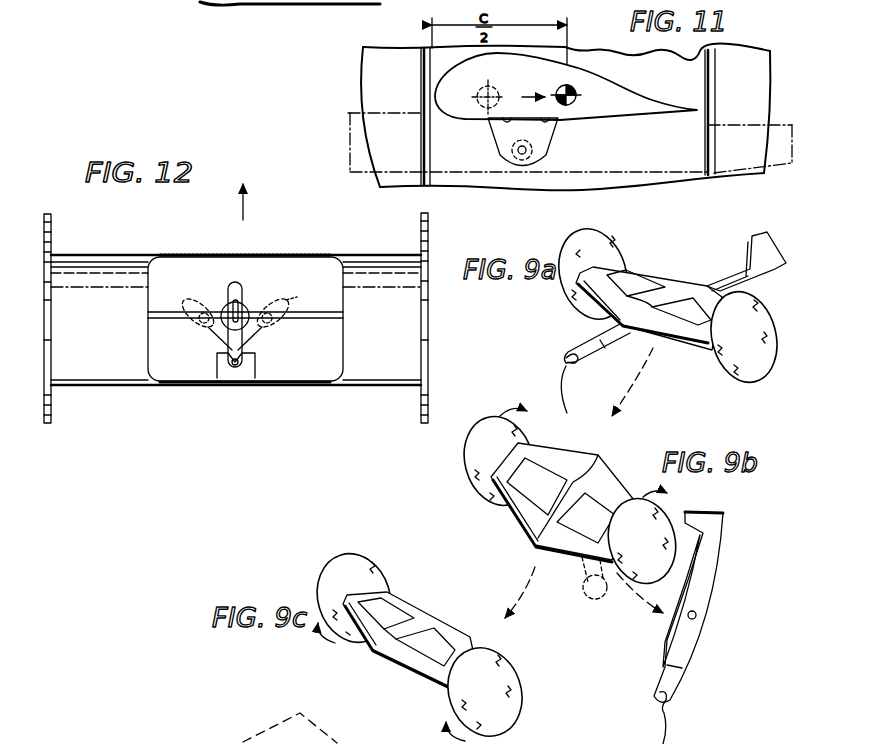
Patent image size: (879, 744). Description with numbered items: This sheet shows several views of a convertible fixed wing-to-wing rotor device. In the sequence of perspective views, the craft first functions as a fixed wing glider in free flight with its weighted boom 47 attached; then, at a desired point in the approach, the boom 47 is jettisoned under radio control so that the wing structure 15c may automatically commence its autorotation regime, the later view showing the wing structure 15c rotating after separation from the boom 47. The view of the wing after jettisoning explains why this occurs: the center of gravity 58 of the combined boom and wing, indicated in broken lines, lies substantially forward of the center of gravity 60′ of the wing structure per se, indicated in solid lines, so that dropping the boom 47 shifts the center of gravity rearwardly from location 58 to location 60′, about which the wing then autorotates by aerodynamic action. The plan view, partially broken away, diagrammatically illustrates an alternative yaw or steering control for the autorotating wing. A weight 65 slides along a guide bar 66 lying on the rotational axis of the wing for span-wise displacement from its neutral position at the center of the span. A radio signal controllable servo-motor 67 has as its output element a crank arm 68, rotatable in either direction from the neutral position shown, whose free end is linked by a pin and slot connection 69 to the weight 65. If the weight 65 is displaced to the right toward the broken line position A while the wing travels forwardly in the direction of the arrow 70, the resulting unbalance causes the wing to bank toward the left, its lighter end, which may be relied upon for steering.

In FIG. 11, the center of gravity 58 is at (487, 109).
In FIG. 11, the center of gravity of the wing structure 60′ is at (576, 98).
In FIG. 12, the arrow 70 is at (247, 216).
In FIG. 12, the weight 65 is at (246, 301).
In FIG. 12, the guide bar 66 is at (170, 312).
In FIG. 12, the crank arm 68 is at (226, 338).
In FIG. 12, the pin and slot connection 69 is at (247, 334).
In FIG. 12, the broken line position A is at (293, 297).
In FIG. 12, the servo-motor 67 is at (247, 378).
In FIG. 9A, the boom 47 is at (748, 282).
In FIG. 9B, the boom 47 is at (687, 637).
In FIG. 9B, the wing structure 15c is at (524, 519).